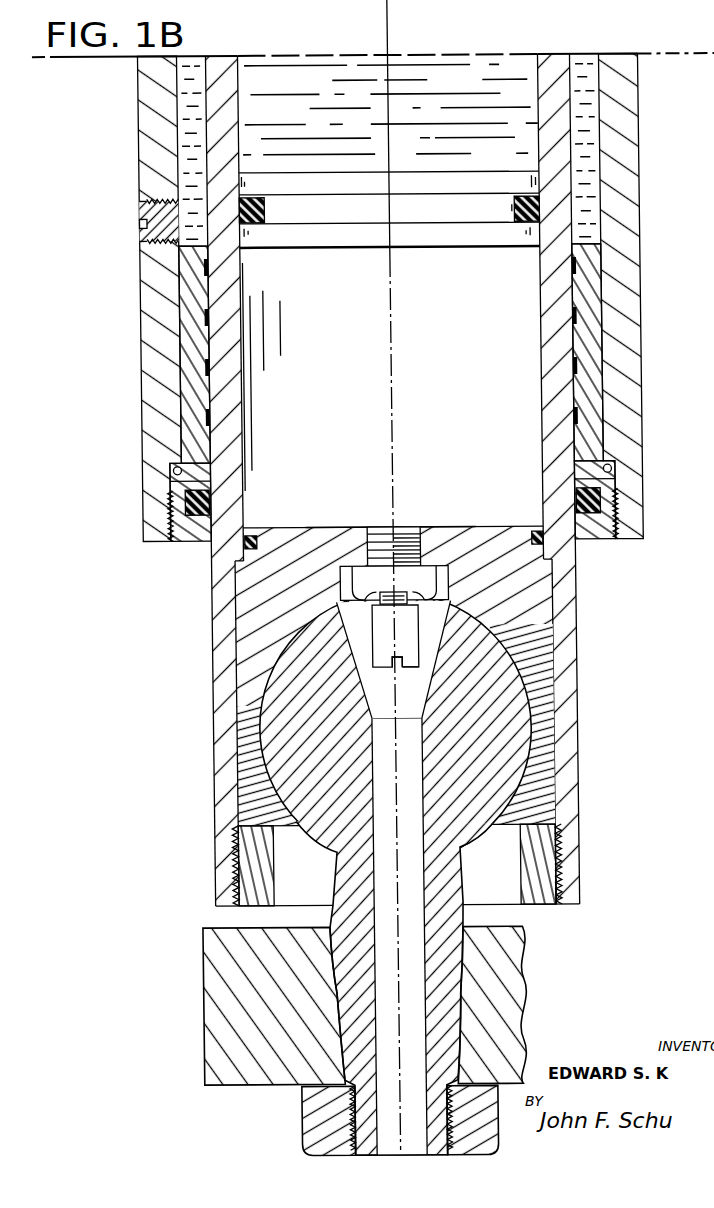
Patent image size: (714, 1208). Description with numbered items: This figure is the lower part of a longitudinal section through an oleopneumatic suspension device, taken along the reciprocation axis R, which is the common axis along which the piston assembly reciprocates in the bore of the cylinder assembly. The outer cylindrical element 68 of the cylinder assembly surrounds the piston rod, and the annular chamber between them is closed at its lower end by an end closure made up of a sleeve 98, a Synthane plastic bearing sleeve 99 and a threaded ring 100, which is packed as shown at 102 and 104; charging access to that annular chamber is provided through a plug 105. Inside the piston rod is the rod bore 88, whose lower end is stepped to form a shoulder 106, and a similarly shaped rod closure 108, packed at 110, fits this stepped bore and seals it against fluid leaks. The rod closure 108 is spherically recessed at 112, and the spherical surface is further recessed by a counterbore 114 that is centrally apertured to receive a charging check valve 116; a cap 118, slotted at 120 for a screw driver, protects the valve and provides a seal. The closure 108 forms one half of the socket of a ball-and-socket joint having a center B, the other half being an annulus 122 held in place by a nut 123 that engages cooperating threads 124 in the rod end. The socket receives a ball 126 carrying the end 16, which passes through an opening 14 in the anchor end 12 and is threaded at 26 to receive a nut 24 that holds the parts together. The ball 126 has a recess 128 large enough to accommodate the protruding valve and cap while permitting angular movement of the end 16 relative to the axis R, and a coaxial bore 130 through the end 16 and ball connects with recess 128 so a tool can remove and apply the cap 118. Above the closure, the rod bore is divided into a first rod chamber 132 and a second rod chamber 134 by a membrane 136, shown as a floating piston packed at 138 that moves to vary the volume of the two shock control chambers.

The anchor end 12 is at (192, 967).
The opening 14 is at (451, 973).
The end 16 is at (437, 1000).
The nut 24 is at (295, 1128).
The threads 26 is at (358, 1118).
The cylindrical element 68 is at (627, 88).
The internal bore 88 is at (238, 399).
The sleeve 98 is at (184, 289).
The bearing sleeve 99 is at (573, 369).
The threaded ring 100 is at (172, 535).
The packing 102 is at (168, 471).
The packing 104 is at (180, 506).
The plug 105 is at (141, 222).
The shoulder 106 is at (542, 551).
The rod closure 108 is at (530, 608).
The packing 110 is at (249, 536).
The spherical recess 112 is at (276, 646).
The counterbore 114 is at (461, 540).
The charging check valve 116 is at (391, 540).
The cap 118 is at (406, 660).
The slot 120 is at (391, 658).
The annulus 122 is at (534, 782).
The nut 123 is at (530, 894).
The threads 124 is at (548, 874).
The ball 126 is at (316, 833).
The recess 128 is at (340, 618).
The bore 130 is at (389, 1137).
The first rod chamber 132 is at (517, 311).
The second rod chamber 134 is at (524, 128).
The membrane 136 is at (375, 233).
The packing 138 is at (250, 224).
The center B is at (410, 717).
The reciprocation axis R is at (388, 358).